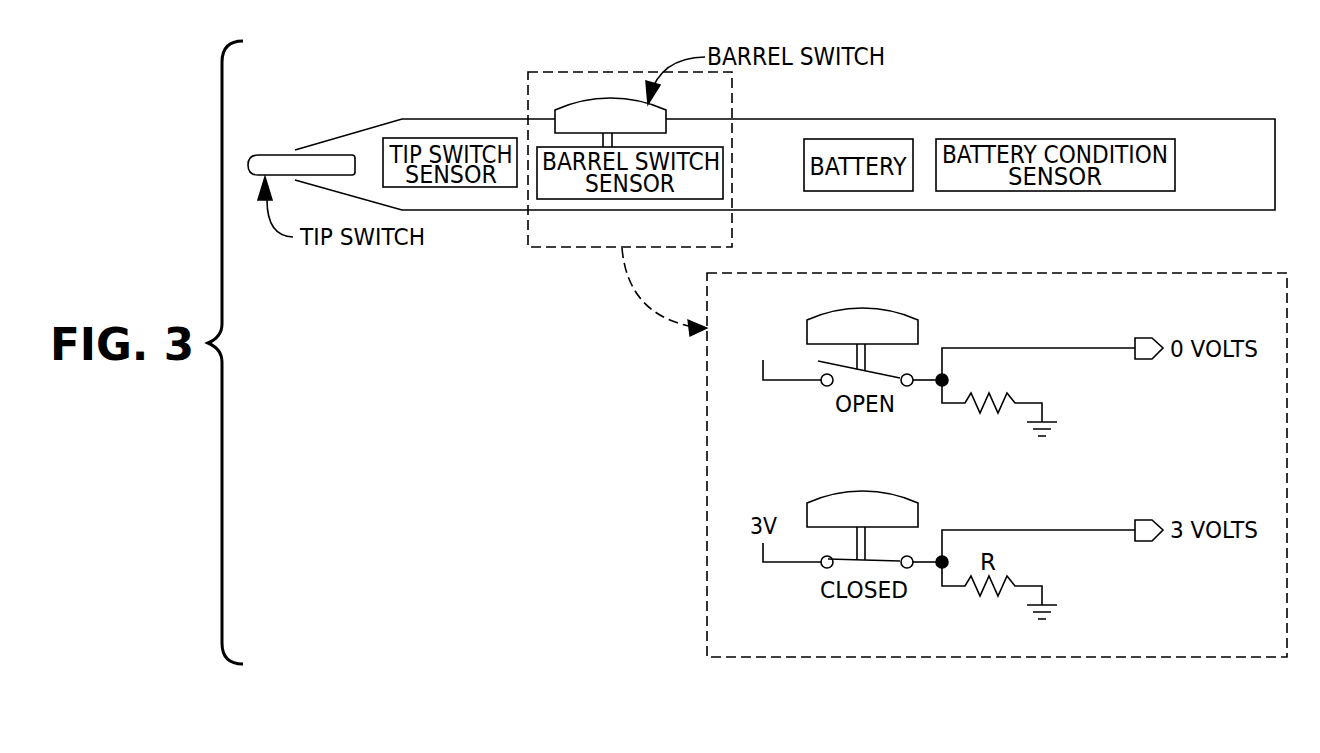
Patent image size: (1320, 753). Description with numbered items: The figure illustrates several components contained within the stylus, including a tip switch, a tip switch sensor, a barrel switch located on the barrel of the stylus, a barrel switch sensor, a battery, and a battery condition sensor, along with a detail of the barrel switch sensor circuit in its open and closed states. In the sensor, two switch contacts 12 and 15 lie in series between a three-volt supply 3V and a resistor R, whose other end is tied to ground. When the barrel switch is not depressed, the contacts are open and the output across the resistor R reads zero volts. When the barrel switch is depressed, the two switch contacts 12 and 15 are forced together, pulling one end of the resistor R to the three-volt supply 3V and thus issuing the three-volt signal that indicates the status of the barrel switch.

The switch contact 12 is at (822, 569).
The switch contact 15 is at (912, 569).
The resistor R is at (992, 394).
The three-volt supply 3V is at (785, 355).